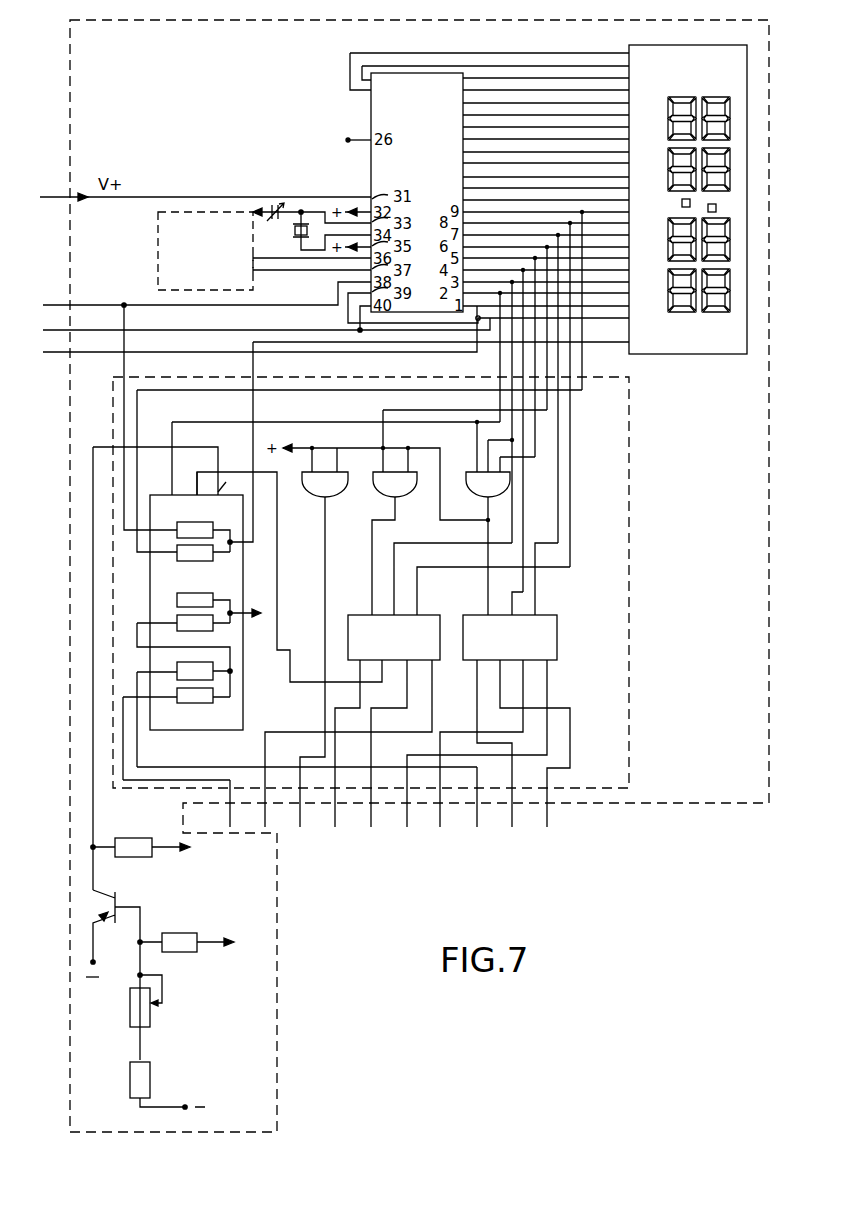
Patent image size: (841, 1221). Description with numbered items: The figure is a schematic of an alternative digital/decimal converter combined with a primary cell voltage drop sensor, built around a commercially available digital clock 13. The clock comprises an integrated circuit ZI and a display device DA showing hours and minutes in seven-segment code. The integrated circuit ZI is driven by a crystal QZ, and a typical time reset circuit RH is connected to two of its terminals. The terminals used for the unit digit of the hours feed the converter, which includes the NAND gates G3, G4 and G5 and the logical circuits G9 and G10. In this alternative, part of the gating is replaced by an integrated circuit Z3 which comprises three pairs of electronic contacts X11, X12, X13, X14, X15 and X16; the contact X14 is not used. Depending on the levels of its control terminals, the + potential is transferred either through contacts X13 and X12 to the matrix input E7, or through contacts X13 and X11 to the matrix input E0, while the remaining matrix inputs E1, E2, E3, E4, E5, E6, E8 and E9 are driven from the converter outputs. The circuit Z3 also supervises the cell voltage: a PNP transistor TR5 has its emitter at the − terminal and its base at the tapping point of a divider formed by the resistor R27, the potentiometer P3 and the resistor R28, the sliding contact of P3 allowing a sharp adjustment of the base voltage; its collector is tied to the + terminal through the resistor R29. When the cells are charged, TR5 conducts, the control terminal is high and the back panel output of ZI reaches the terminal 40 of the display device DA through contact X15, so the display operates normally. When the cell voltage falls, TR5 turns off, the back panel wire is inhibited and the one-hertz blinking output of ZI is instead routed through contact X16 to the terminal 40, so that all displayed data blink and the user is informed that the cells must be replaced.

The integrated circuit ZI is at (367, 110).
The crystal QZ is at (293, 233).
The time reset circuit RH is at (162, 260).
The display device DA is at (725, 355).
The terminal of displaying device 40 is at (626, 356).
The NAND gate G3 is at (330, 498).
The NAND gate G4 is at (400, 498).
The NAND gate G5 is at (476, 498).
The logical circuit G9 is at (438, 618).
The logical circuit G10 is at (558, 622).
The integrated circuit Z3 is at (243, 708).
The electronic contact X11 is at (205, 703).
The electronic contact X12 is at (208, 668).
The electronic contact X13 is at (175, 618).
The electronic contact X14 is at (190, 593).
The electronic contact X15 is at (200, 561).
The electronic contact X16 is at (200, 526).
The input of the matrix E0 is at (214, 827).
The input of the matrix E1 is at (254, 827).
The input of the matrix E2 is at (290, 827).
The input of the matrix E3 is at (326, 827).
The input of the matrix E4 is at (362, 827).
The input of the matrix E5 is at (397, 827).
The input of the matrix E6 is at (432, 827).
The input of the matrix E7 is at (467, 827).
The input of the matrix E8 is at (502, 827).
The input of the matrix E9 is at (537, 827).
The resistor R29 is at (135, 832).
The PNP transistor TR5 is at (121, 969).
The resistor R27 is at (183, 927).
The potentiometer P3 is at (150, 1015).
The resistor R28 is at (150, 1078).
The digital clock 13 is at (742, 806).